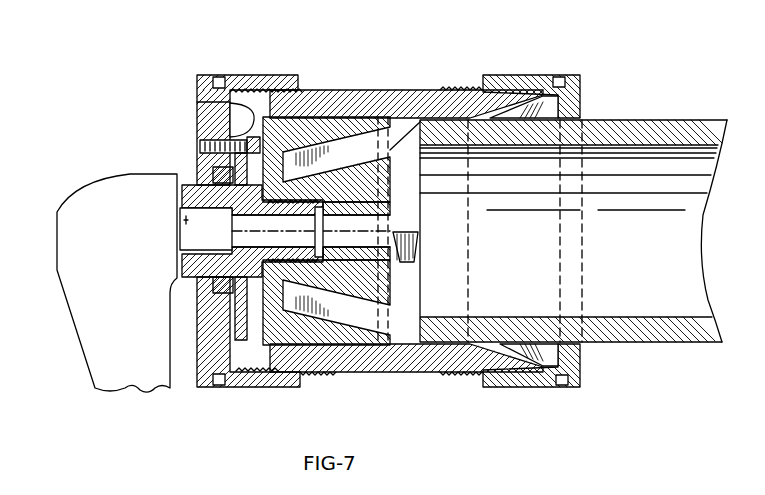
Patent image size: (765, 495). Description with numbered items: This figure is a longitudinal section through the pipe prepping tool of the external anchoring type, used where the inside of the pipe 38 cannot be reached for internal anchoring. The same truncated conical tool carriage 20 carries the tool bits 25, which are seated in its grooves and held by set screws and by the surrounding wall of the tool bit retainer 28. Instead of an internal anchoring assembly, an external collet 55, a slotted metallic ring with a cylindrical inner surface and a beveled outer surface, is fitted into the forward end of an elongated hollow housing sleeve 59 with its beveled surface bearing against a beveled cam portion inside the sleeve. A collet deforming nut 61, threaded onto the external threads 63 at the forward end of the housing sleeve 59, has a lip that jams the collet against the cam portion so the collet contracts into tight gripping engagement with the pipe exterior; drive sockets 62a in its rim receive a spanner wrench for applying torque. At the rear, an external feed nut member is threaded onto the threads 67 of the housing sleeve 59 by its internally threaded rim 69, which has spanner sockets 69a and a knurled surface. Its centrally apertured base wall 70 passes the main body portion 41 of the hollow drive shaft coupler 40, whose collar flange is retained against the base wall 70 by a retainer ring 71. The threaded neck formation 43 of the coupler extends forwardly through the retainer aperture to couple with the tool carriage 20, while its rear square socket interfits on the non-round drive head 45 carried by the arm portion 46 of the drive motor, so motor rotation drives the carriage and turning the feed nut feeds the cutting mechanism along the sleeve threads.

The tool carriage 20 is at (390, 287).
The tool bits 25 is at (420, 246).
The tool bit retainer 28 is at (323, 338).
The pipe 38 is at (678, 120).
The hollow drive shaft coupler 40 is at (176, 269).
The main body portion 41 is at (186, 185).
The threaded neck formation 43 is at (304, 202).
The non-round drive head 45 is at (184, 218).
The arm portion 46 is at (140, 172).
The external collet 55 is at (543, 103).
The housing sleeve 59 is at (394, 93).
The collet deforming nut 61 is at (521, 73).
The drive sockets 62a is at (558, 76).
The external threads 63 is at (470, 90).
The threads 67 is at (318, 372).
The internally threaded rim 69 is at (266, 374).
The sockets 69a is at (220, 76).
The base wall 70 is at (275, 75).
The retainer ring 71 is at (197, 101).